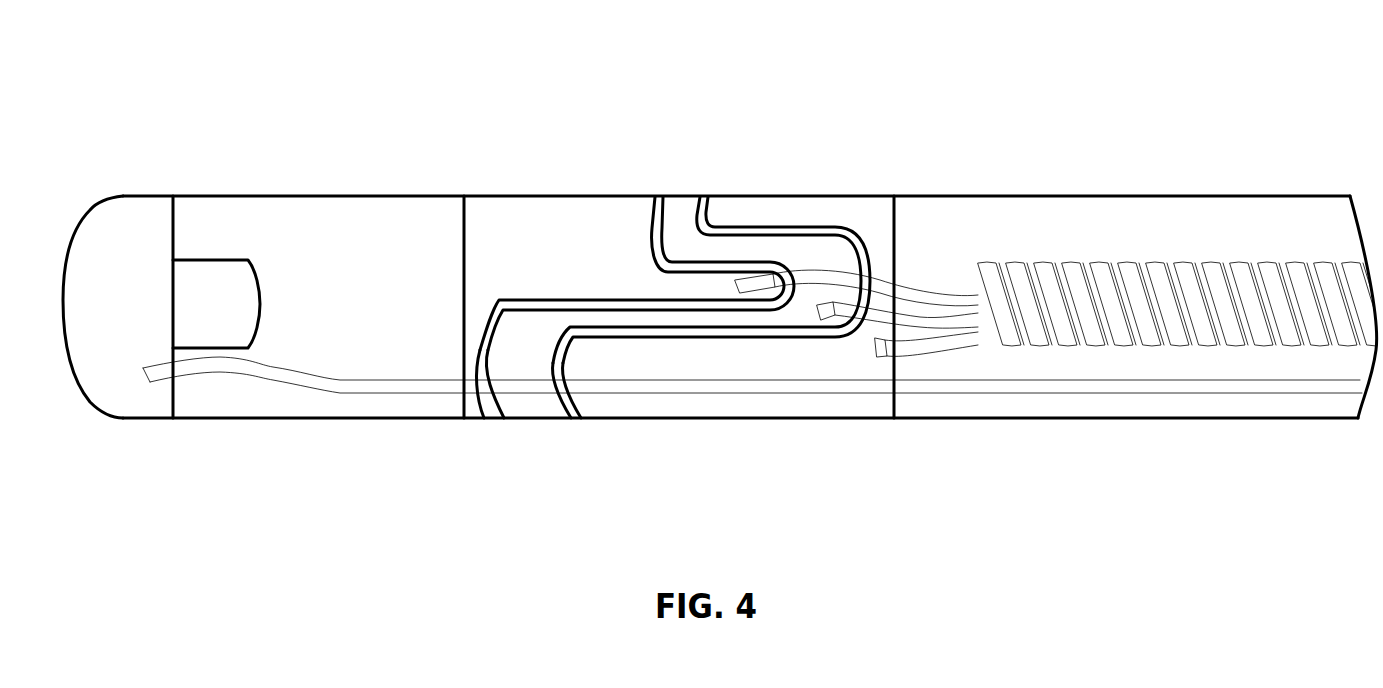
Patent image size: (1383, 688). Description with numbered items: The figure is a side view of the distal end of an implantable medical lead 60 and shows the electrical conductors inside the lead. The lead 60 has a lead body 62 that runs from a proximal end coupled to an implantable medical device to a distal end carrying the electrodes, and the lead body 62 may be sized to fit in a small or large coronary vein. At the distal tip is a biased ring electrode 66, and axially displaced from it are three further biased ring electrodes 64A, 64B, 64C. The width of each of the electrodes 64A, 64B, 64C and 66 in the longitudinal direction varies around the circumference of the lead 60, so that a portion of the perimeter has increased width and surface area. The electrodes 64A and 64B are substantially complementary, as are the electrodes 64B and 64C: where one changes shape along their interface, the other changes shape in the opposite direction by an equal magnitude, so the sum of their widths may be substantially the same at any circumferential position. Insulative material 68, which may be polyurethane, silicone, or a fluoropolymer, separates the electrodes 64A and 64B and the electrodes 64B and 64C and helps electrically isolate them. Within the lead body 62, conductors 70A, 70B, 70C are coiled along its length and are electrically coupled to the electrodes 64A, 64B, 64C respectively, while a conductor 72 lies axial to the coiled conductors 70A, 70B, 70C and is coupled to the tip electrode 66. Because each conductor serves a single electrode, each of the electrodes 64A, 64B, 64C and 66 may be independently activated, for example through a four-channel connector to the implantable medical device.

The implantable medical lead 60 is at (772, 62).
The lead body 62 is at (1170, 196).
The biased ring electrode 64A is at (815, 194).
The biased ring electrode 64B is at (686, 196).
The biased ring electrode 64C is at (528, 196).
The biased ring electrode 66 is at (129, 196).
The insulative material 68 is at (499, 420).
The conductor 70A is at (938, 347).
The conductor 70B is at (880, 317).
The conductor 70C is at (920, 288).
The conductor 72 is at (1097, 392).